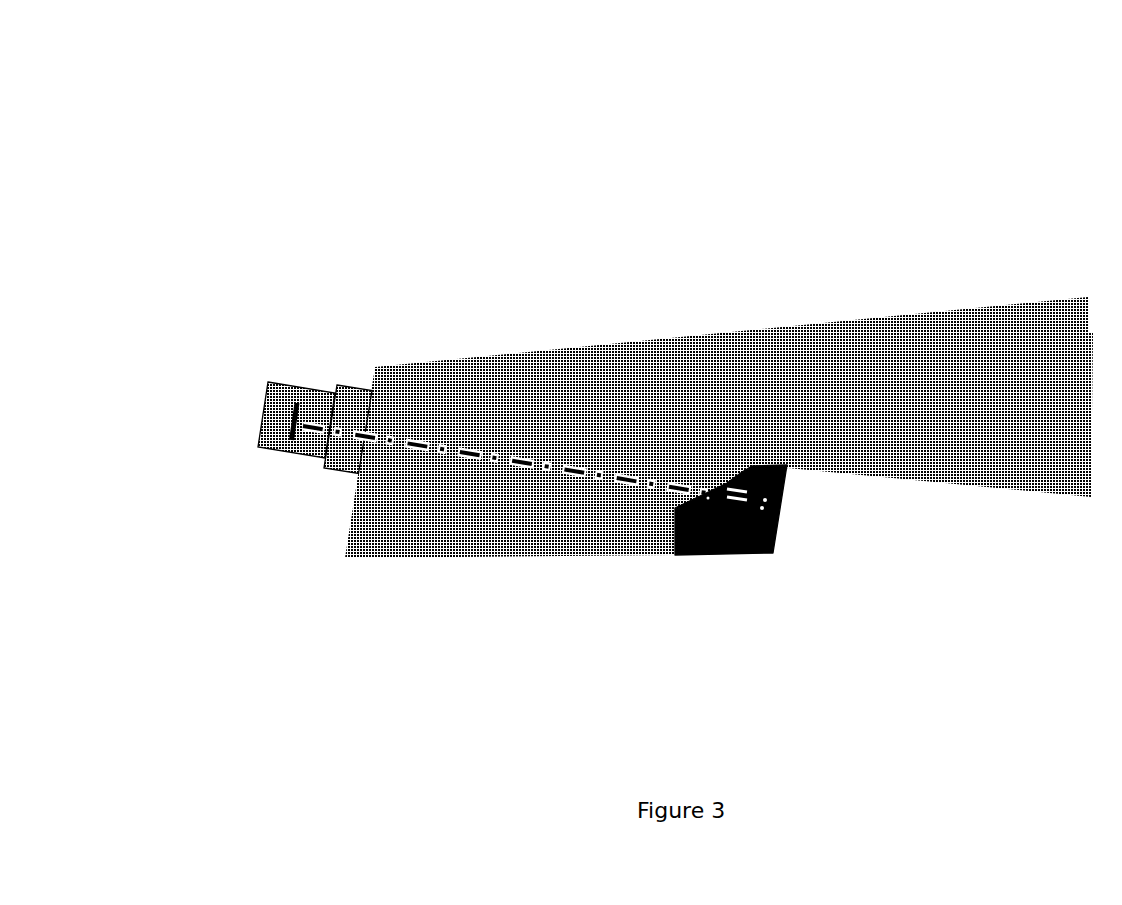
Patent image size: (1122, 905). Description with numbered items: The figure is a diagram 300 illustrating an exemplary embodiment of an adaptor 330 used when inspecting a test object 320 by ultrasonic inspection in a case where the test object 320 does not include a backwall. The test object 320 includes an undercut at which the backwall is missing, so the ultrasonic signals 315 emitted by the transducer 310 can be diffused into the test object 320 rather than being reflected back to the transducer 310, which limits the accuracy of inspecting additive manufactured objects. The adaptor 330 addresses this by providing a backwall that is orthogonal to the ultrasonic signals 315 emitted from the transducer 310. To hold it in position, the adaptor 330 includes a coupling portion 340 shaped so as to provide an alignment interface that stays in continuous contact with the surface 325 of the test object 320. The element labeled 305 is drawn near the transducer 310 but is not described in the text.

The diagram 300 is at (203, 82).
The camera/sensor device 305 is at (268, 454).
The transducer 310 is at (292, 406).
The ultrasonic signals 315 is at (480, 456).
The test object 320 is at (719, 427).
The surface 325 is at (672, 528).
The adaptor 330 is at (784, 500).
The coupling portion 340 is at (745, 476).